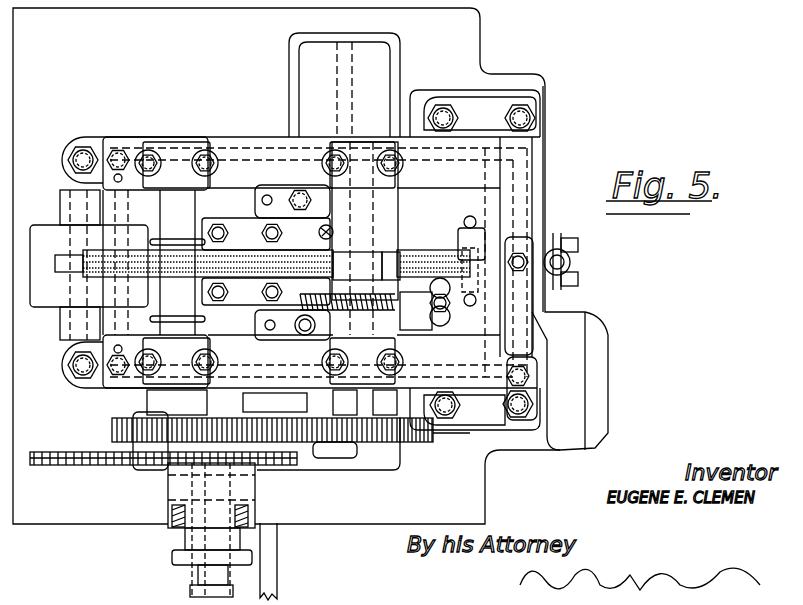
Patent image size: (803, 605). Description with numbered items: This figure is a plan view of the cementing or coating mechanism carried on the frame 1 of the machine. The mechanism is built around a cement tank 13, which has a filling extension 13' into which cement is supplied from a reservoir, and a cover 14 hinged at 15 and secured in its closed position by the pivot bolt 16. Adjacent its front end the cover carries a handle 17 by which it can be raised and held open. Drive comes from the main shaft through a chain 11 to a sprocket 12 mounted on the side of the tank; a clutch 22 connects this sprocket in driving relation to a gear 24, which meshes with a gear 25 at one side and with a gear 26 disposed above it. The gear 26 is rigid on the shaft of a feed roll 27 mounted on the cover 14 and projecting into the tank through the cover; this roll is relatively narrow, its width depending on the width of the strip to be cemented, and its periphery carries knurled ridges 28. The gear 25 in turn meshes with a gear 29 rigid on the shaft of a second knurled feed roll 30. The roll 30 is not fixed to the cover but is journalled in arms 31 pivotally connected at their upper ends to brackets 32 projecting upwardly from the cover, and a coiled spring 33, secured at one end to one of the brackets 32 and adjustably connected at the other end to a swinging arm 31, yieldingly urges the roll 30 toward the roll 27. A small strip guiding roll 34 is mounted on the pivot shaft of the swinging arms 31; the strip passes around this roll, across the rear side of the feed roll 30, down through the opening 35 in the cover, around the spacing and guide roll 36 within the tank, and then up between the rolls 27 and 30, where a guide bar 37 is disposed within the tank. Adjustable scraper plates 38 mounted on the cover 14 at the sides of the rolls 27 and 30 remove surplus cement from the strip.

The frame 1 is at (472, 30).
The chain 11 is at (78, 465).
The sprocket 12 is at (255, 487).
The cement tank 13 is at (301, 148).
The filling extension 13' is at (359, 85).
The cover 14 is at (470, 140).
The hinge 15 is at (67, 212).
The pivot bolt 16 is at (571, 262).
The handle 17 is at (602, 386).
The clutch 22 is at (172, 557).
The gear 24 is at (240, 415).
The gear 25 is at (310, 413).
The gear 26 is at (110, 433).
The feed roll 27 is at (150, 251).
The knurled ridges 28 is at (80, 268).
The gear 29 is at (413, 444).
The second knurled feed roll 30 is at (430, 262).
The arms 31 is at (397, 185).
The brackets 32 is at (303, 155).
The coiled spring 33 is at (262, 318).
The strip guiding roll 34 is at (405, 255).
The opening 35 is at (470, 307).
The spacing and guide roll 36 is at (467, 219).
The guide bar 37 is at (290, 222).
The scraper plates 38 is at (236, 228).